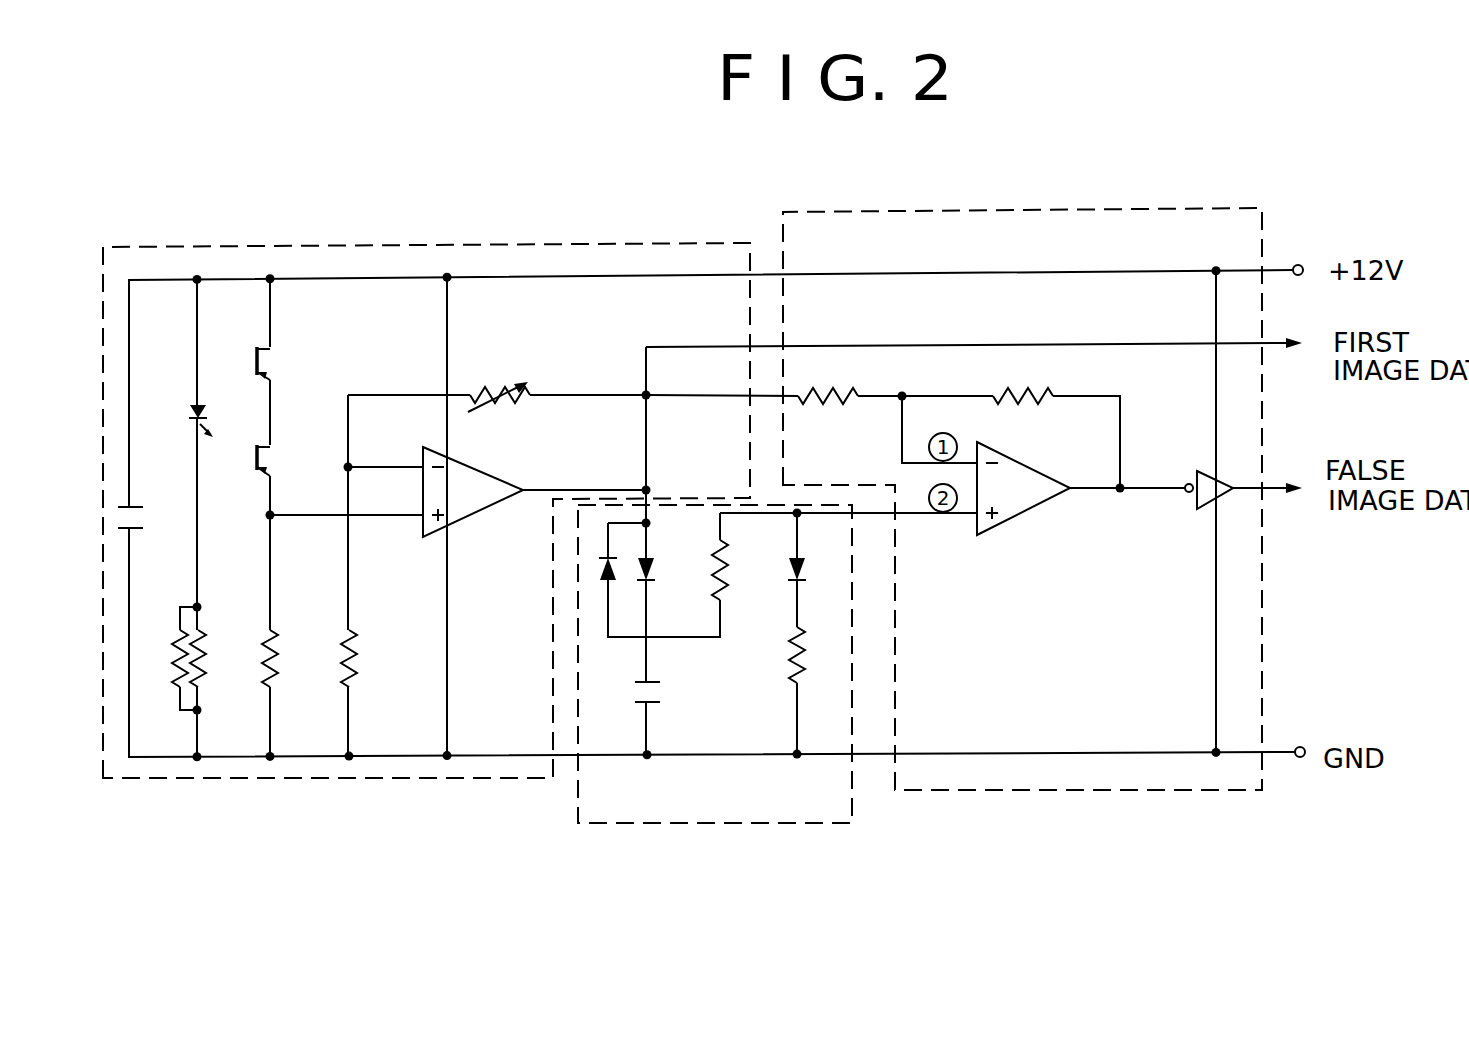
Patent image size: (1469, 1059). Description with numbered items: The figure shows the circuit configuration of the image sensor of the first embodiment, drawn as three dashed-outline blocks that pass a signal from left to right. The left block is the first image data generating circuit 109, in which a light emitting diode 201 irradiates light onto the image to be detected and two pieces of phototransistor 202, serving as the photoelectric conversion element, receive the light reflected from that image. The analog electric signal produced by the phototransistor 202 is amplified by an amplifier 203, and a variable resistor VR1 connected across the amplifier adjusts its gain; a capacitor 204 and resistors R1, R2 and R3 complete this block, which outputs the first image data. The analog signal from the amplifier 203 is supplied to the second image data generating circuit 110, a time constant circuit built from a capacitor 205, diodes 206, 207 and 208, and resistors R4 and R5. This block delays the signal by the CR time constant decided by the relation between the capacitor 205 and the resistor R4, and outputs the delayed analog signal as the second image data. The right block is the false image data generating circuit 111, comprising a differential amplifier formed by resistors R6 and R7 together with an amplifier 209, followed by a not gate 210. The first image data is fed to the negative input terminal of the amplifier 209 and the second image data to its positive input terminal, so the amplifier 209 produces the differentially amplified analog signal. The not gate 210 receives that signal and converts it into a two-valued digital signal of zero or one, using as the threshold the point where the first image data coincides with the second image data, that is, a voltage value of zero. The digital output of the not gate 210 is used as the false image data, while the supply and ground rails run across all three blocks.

The first image data generating circuit 109 is at (514, 240).
The second image data generating circuit 110 is at (652, 830).
The false image data generating circuit 111 is at (1100, 207).
The light emitting diode 201 is at (193, 403).
The phototransistor 202 is at (267, 363).
The amplifier 203 is at (483, 490).
The capacitor 204 is at (147, 505).
The capacitor 205 is at (657, 698).
The diode 206 is at (597, 572).
The diode 207 is at (658, 560).
The diode 208 is at (807, 570).
The amplifier 209 is at (1027, 495).
The not gate 210 is at (1192, 497).
The resistor R1 is at (210, 658).
The resistor R2 is at (292, 658).
The resistor R3 is at (371, 658).
The resistor R4 is at (741, 570).
The resistor R5 is at (817, 655).
The resistor R6 is at (828, 379).
The resistor R7 is at (1023, 379).
The variable resistor VR1 is at (502, 378).